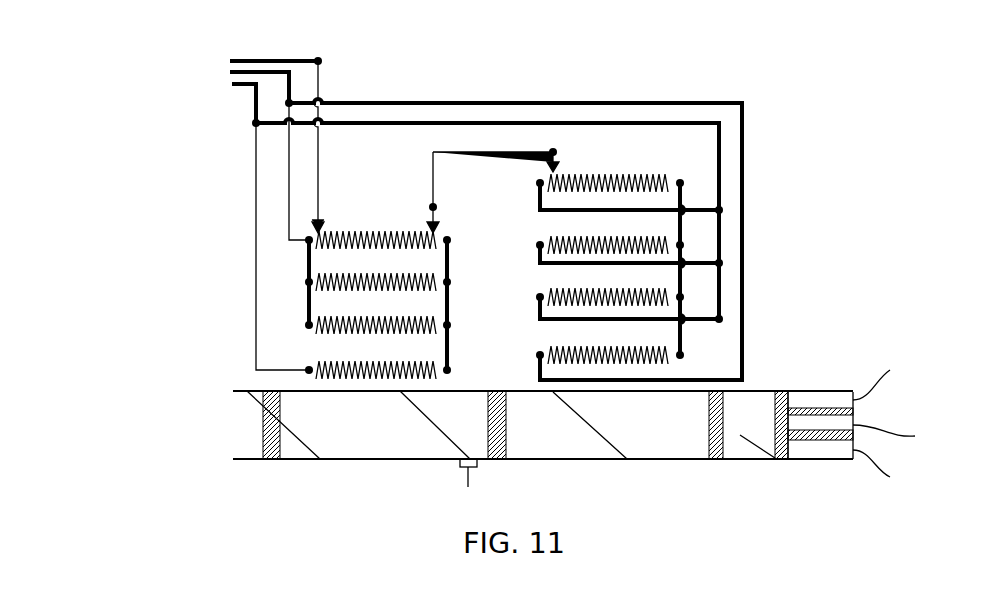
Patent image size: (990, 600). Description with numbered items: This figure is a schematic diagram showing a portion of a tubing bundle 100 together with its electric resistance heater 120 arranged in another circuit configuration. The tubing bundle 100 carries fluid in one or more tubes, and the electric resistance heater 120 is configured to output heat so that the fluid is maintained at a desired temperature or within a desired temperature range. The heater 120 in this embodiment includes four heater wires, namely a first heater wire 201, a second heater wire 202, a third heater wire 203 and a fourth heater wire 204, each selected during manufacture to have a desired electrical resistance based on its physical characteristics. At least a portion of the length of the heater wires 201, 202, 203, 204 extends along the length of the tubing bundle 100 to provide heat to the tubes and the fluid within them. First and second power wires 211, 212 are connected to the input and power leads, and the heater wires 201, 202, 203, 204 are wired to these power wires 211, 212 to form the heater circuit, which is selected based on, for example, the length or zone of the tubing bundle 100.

The tubing bundle 100 is at (212, 388).
The electric resistance heater 120 is at (513, 76).
The first heater wire 201 is at (634, 178).
The second heater wire 202 is at (665, 237).
The third heater wire 203 is at (665, 298).
The fourth heater wire 204 is at (680, 355).
The first power wire 211 is at (719, 162).
The second power wire 212 is at (745, 118).